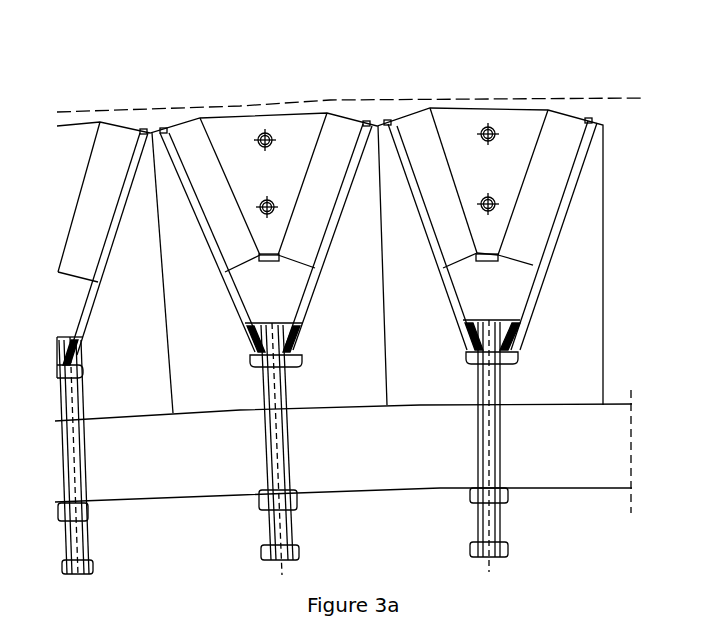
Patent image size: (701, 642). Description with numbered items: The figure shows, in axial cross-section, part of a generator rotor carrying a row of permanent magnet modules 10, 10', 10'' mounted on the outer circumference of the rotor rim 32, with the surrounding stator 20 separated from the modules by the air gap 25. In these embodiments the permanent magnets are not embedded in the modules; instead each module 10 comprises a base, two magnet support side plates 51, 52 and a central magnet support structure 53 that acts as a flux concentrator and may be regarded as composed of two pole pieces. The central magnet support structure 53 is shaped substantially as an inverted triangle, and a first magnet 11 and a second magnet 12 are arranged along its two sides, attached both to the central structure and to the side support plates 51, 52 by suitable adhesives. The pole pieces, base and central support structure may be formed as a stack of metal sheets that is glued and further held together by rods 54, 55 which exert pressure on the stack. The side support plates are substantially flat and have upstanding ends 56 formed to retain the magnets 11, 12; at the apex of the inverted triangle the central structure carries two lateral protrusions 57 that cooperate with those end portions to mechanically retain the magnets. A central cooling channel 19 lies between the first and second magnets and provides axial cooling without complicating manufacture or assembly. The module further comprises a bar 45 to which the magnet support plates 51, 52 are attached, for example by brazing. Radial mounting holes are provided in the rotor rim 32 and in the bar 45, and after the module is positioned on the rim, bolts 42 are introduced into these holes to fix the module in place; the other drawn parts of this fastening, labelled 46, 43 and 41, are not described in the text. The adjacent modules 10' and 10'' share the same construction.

The stator 20 is at (78, 115).
The permanent magnet module 10'' is at (102, 309).
The magnet support side plate 51 is at (170, 187).
The magnet support side plate 52 is at (360, 152).
The central magnet support structure 53 is at (242, 147).
The air gap 25 is at (262, 108).
The permanent magnet module 10 is at (269, 302).
The first magnet 11 is at (423, 140).
The rod 54 is at (488, 128).
The rod 55 is at (490, 193).
The second magnet 12 is at (560, 133).
The end 56 is at (588, 125).
The permanent magnet module 10' is at (519, 301).
The lateral protrusion 57 is at (498, 258).
The central cooling channel 19 is at (497, 297).
The left clamp wedge 46 is at (475, 358).
The bar 45 is at (500, 357).
The threaded rod 43 is at (500, 432).
The upper nut 41 is at (490, 478).
The bolt 42 is at (500, 552).
The rotor rim 32 is at (437, 463).